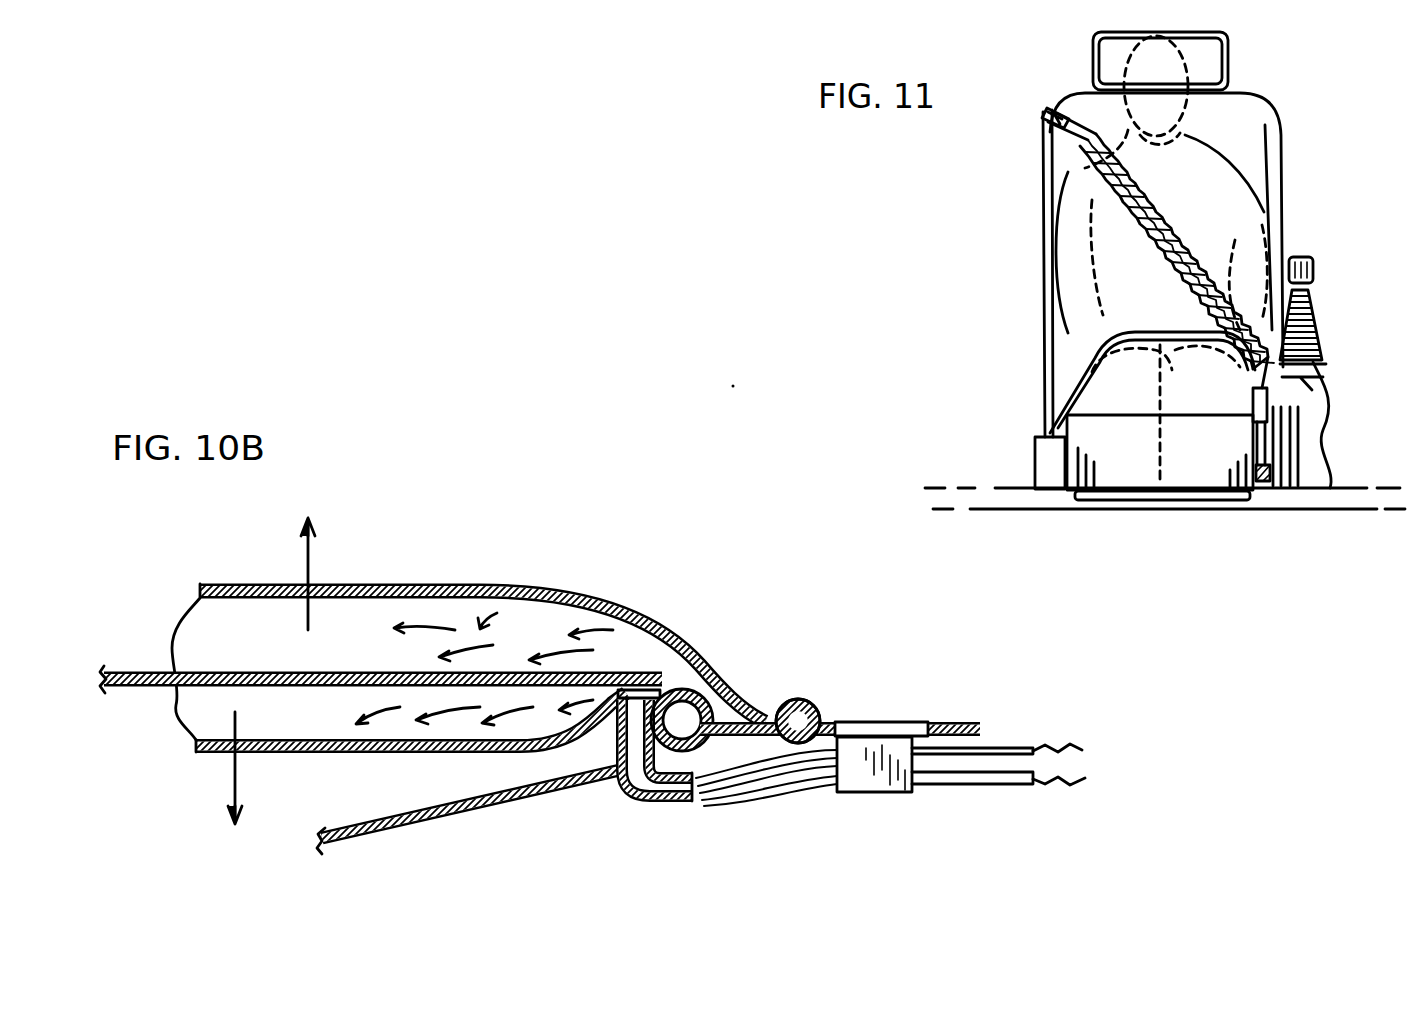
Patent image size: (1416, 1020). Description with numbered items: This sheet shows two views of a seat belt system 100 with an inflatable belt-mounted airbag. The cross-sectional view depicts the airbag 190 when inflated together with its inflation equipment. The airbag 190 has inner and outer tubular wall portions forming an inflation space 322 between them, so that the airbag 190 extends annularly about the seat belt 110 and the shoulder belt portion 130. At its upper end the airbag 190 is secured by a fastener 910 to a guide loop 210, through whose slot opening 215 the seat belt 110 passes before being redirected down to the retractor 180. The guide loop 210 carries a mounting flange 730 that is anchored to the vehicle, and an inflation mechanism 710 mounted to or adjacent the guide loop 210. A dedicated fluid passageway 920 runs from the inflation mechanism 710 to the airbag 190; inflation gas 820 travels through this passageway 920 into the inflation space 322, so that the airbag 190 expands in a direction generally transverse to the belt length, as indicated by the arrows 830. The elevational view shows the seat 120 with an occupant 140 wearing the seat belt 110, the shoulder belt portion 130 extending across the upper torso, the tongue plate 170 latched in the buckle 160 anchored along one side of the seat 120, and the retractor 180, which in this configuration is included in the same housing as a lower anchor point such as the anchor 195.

In FIG. 11, the seat belt system 100 is at (1014, 231).
In FIG. 10B, the seat belt 110 is at (133, 668).
In FIG. 11, the seat belt 110 is at (1040, 323).
In FIG. 11, the seat 120 is at (1246, 131).
In FIG. 11, the shoulder belt portion 130 is at (1080, 100).
In FIG. 11, the occupant 140 is at (1262, 172).
In FIG. 11, the buckle 160 is at (1267, 406).
In FIG. 11, the tongue plate 170 is at (1290, 368).
In FIG. 11, the retractor 180 is at (1045, 460).
In FIG. 10B, the airbag 190 is at (207, 753).
In FIG. 11, the airbag 190 is at (1205, 250).
In FIG. 11, the anchor 195 is at (1272, 474).
In FIG. 10B, the guide loop 210 is at (718, 742).
In FIG. 11, the guide loop 210 is at (1042, 124).
In FIG. 10B, the slot opening 215 is at (725, 748).
In FIG. 10B, the inflation space 322 is at (233, 613).
In FIG. 10B, the inflation mechanism 710 is at (881, 793).
In FIG. 10B, the mounting flange 730 is at (893, 722).
In FIG. 10B, the inflation gas 820 is at (438, 630).
In FIG. 10B, the arrows 830 is at (312, 553).
In FIG. 10B, the fastener 910 is at (802, 700).
In FIG. 10B, the fluid passageway 920 is at (628, 795).